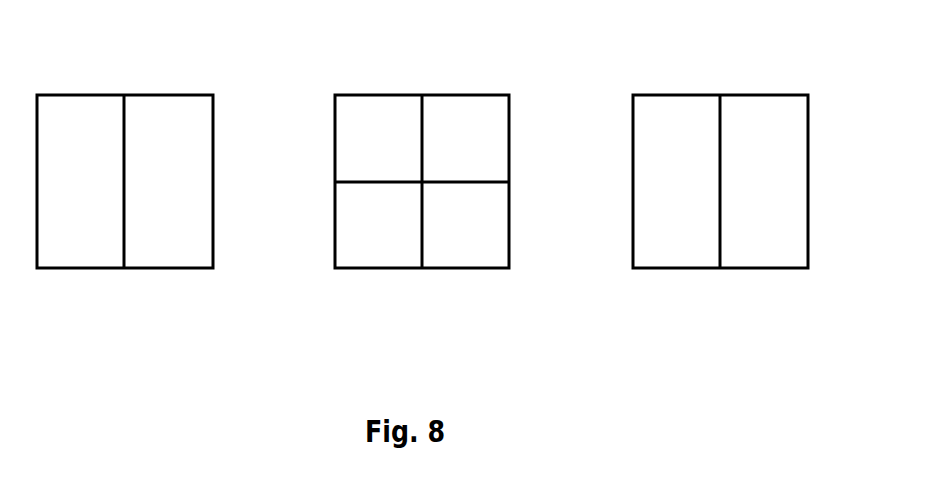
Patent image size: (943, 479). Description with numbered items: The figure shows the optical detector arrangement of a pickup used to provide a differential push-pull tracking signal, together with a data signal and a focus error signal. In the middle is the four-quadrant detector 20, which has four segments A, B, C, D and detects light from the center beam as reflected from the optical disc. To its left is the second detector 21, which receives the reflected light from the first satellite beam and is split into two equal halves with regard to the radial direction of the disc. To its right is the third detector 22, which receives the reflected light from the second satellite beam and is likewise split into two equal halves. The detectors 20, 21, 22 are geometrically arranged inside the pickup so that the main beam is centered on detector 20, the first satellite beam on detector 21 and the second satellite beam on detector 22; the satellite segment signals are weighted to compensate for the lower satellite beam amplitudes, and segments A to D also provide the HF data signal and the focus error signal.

The four-quadrant detector 20 is at (385, 268).
The second detector 21 is at (157, 268).
The third detector 22 is at (685, 268).